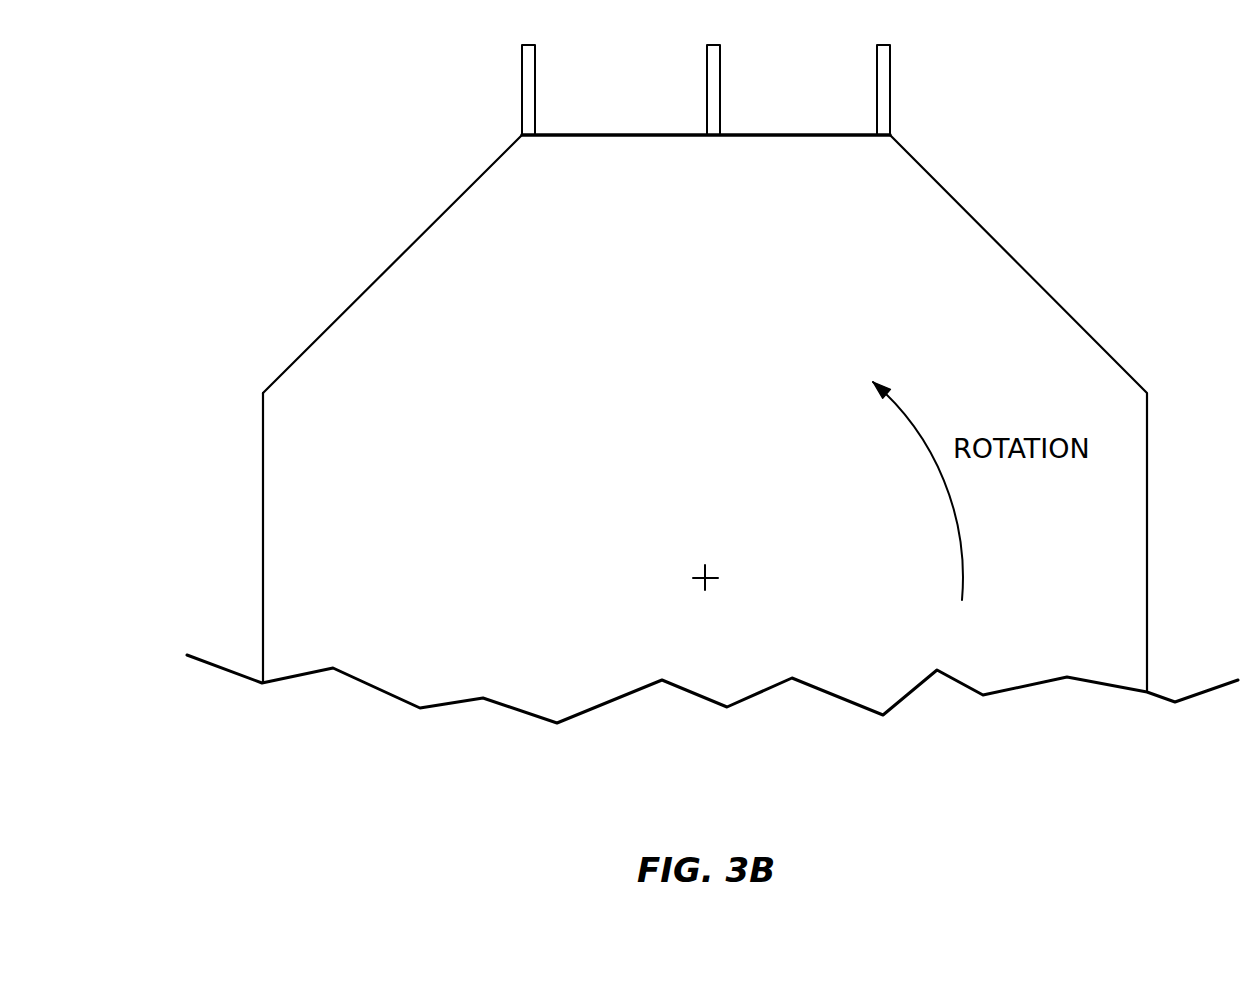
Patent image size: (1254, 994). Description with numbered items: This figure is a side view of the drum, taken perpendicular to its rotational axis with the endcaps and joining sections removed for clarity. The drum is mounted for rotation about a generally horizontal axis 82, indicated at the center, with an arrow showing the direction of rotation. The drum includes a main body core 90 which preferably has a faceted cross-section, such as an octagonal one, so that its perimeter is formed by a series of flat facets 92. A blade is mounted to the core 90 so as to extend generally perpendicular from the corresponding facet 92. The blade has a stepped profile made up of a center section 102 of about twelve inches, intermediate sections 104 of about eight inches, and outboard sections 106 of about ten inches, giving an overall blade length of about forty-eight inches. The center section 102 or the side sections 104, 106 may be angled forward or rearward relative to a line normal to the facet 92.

The rotational axis 82 is at (717, 577).
The main body core 90 is at (318, 532).
The facet 92 is at (760, 138).
The center section 102 is at (877, 92).
The intermediate section 104 is at (707, 84).
The outboard section 106 is at (536, 63).